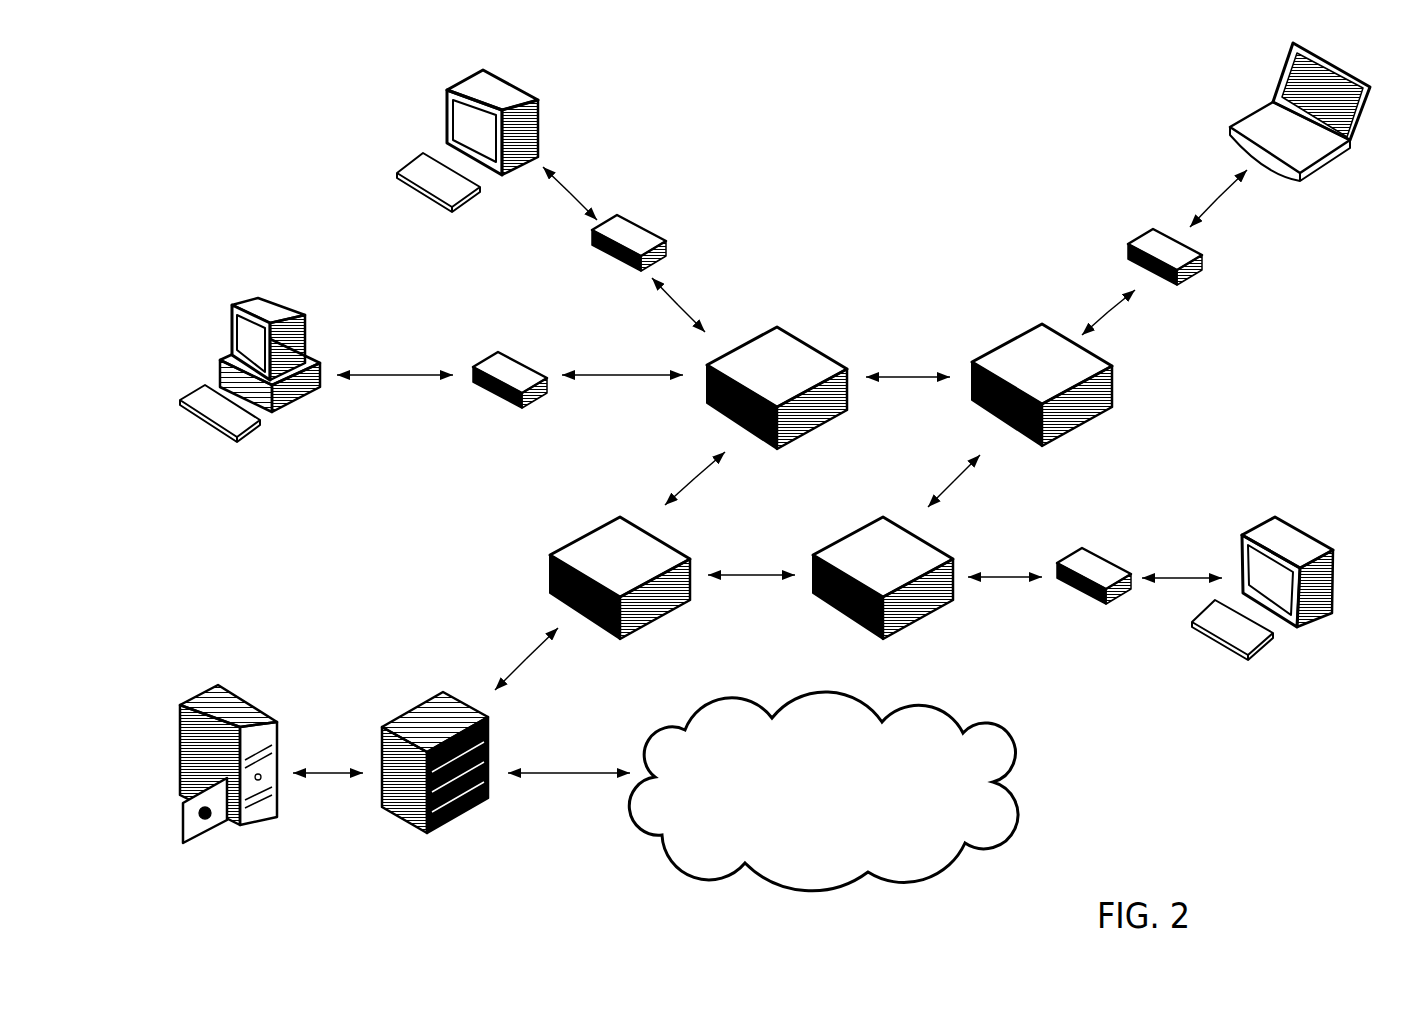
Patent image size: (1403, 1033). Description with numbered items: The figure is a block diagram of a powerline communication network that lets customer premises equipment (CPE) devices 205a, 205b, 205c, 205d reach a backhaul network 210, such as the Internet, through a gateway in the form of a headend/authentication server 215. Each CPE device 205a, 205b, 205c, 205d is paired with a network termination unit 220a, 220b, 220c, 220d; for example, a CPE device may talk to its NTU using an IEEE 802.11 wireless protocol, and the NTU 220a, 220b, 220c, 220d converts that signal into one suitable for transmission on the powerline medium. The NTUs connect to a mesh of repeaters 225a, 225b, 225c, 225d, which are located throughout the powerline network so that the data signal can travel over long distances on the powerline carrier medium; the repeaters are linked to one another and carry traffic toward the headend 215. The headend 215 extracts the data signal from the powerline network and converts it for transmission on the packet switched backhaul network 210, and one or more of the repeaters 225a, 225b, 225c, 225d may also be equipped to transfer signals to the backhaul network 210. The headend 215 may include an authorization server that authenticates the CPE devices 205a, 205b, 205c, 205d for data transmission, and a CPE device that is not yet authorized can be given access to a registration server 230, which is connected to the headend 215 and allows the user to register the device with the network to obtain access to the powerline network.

The customer premises equipment (CPE) device 205a is at (286, 306).
The customer premises equipment (CPE) device 205b is at (527, 92).
The customer premises equipment (CPE) device 205c is at (1257, 108).
The customer premises equipment (CPE) device 205d is at (1290, 525).
The backhaul network 210 is at (985, 728).
The headend/authentication server 215 is at (420, 700).
The network termination unit (NTU) 220a is at (515, 352).
The network termination unit (NTU) 220b is at (637, 228).
The network termination unit (NTU) 220c is at (1195, 280).
The network termination unit (NTU) 220d is at (1097, 558).
The repeater 225a is at (806, 338).
The repeater 225b is at (1010, 338).
The repeater 225c is at (927, 540).
The repeater 225d is at (665, 540).
The registration server 230 is at (235, 690).